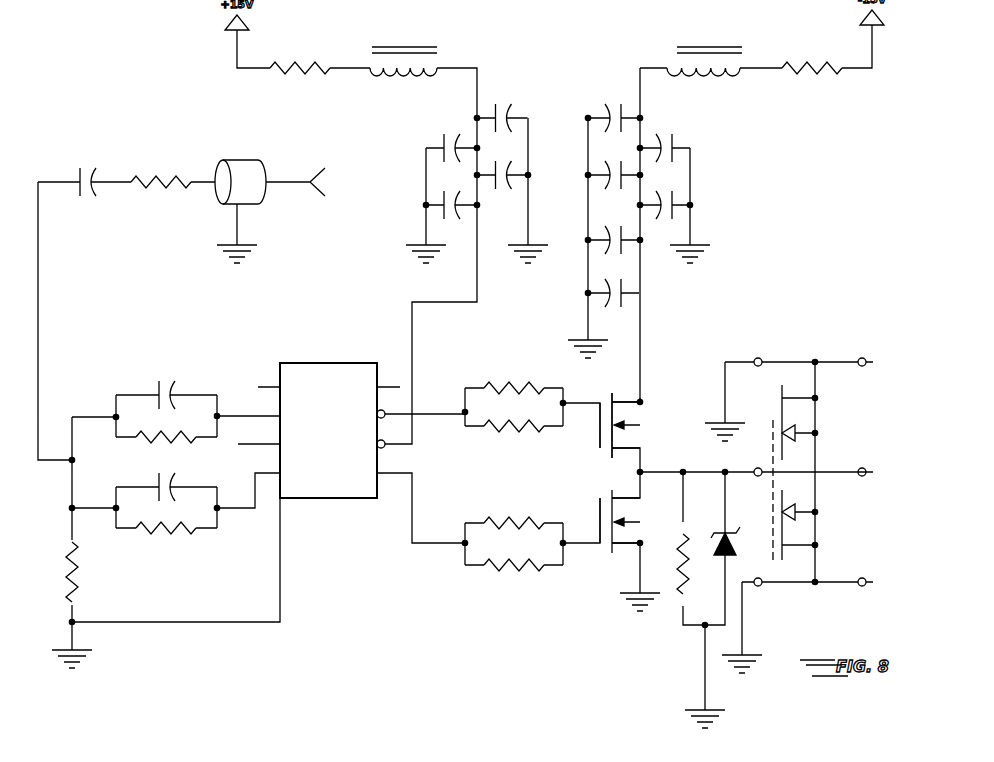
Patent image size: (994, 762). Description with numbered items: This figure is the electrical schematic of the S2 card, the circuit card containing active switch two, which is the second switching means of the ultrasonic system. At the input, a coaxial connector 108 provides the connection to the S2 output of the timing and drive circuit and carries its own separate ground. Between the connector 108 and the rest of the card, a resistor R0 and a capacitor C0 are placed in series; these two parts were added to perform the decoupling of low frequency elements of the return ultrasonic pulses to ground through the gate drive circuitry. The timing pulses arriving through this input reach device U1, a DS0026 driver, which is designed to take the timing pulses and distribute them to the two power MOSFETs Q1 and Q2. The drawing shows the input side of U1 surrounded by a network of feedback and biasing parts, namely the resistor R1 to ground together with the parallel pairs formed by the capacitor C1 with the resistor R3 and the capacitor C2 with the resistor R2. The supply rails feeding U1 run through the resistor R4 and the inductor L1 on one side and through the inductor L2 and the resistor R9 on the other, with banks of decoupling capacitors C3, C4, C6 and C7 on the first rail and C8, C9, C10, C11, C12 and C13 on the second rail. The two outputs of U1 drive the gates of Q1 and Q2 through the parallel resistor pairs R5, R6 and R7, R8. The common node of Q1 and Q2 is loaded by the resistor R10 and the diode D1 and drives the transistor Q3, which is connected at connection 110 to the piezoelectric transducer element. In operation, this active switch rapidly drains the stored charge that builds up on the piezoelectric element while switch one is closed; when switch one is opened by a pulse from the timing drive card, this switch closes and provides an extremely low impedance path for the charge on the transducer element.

The coaxial connector 108 is at (233, 166).
The connection 110 is at (789, 490).
The device U1 is at (329, 422).
The power MOSFET Q1 is at (632, 425).
The power MOSFET Q2 is at (632, 521).
The transistor Q3 is at (798, 451).
The zener diode D1 is at (736, 541).
The resistor R0 is at (161, 173).
The resistor R1 is at (83, 572).
The resistor R2 is at (165, 519).
The resistor R3 is at (165, 427).
The resistor R4 is at (300, 58).
The resistor R5 is at (514, 381).
The resistor R6 is at (514, 420).
The resistor R7 is at (514, 516).
The resistor R8 is at (514, 560).
The resistor R9 is at (812, 58).
The resistor R10 is at (671, 564).
The capacitor C0 is at (87, 173).
The capacitor C1 is at (168, 393).
The capacitor C2 is at (168, 485).
The capacitor C3 is at (441, 148).
The capacitor C4 is at (441, 205).
The capacitor C6 is at (515, 118).
The capacitor C7 is at (514, 175).
The capacitor C8 is at (604, 118).
The capacitor C9 is at (604, 175).
The capacitor C10 is at (601, 240).
The capacitor C11 is at (601, 293).
The capacitor C12 is at (679, 148).
The capacitor C13 is at (679, 205).
The inductor L1 is at (403, 52).
The inductor L2 is at (704, 52).